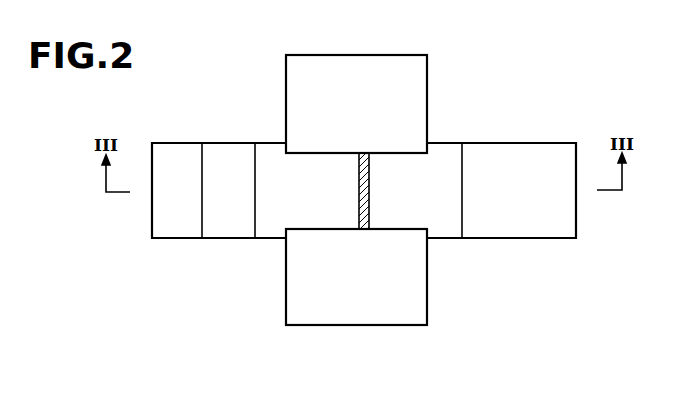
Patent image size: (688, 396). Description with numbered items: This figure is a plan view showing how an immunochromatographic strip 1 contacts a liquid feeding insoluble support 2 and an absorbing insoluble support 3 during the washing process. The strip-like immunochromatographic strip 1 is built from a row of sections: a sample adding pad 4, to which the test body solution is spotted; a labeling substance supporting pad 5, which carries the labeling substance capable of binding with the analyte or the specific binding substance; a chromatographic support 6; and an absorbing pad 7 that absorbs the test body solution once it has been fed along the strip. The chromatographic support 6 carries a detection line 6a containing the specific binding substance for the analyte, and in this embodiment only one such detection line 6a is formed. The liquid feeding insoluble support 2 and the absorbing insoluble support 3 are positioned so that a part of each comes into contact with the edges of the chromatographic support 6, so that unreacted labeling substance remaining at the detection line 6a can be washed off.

The immunochromatographic strip 1 is at (482, 143).
The liquid feeding insoluble support 2 is at (395, 317).
The absorbing insoluble support 3 is at (415, 72).
The sample adding pad 4 is at (173, 232).
The labeling substance supporting pad 5 is at (228, 232).
The chromatographic support 6 is at (271, 232).
The detection line 6a is at (371, 173).
The absorbing pad 7 is at (514, 232).